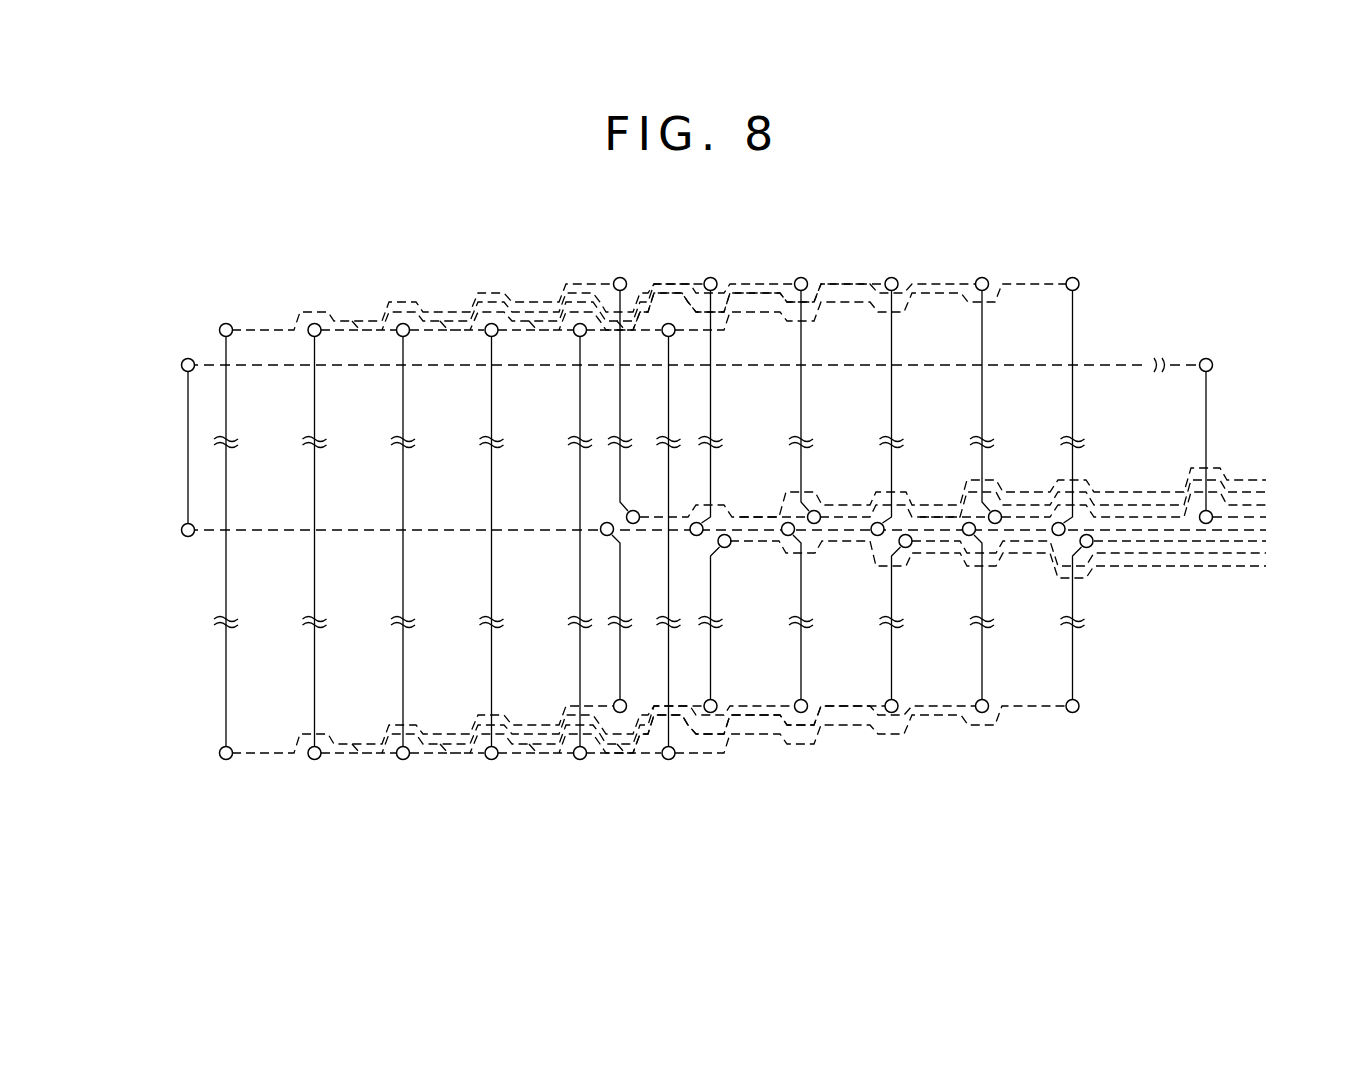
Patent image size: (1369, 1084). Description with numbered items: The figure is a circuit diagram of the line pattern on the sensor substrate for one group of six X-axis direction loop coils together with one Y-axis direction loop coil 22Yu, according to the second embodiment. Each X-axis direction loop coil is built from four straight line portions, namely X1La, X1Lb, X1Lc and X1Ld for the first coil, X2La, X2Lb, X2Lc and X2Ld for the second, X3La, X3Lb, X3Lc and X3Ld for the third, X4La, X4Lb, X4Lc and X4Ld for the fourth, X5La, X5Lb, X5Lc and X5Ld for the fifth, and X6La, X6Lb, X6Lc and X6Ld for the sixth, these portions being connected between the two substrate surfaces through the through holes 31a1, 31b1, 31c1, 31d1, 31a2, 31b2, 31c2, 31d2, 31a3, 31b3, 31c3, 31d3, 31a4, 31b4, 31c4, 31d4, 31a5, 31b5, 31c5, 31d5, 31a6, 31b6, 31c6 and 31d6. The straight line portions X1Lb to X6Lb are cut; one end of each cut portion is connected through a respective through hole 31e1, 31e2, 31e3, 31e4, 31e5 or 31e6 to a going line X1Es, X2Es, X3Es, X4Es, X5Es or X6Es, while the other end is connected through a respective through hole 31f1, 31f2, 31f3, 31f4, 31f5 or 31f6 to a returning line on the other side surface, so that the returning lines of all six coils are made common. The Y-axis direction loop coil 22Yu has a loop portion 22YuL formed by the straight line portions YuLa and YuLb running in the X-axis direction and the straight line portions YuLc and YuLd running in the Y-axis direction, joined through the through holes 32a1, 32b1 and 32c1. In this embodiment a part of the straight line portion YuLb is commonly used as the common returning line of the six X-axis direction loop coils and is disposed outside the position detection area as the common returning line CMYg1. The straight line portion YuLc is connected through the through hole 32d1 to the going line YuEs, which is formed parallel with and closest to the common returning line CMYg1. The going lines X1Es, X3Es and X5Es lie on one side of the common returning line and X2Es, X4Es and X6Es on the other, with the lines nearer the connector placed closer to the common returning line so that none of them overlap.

The Y-axis direction loop coil 22Yu is at (210, 363).
The loop portion 22YuL is at (273, 535).
The straight line portion YuLa is at (1115, 362).
The straight line portion YuLb is at (448, 527).
The straight line portion YuLc is at (186, 420).
The straight line portion YuLd is at (1212, 392).
The going line YuEs is at (1265, 526).
The through hole 32a1 is at (1206, 358).
The through hole 32b1 is at (186, 358).
The through hole 32c1 is at (181, 530).
The through hole 32d1 is at (1206, 524).
The common returning line CMYg1 is at (1259, 589).
The straight line portion X1La is at (225, 580).
The straight line portion X2La is at (312, 430).
The straight line portion X3La is at (402, 492).
The straight line portion X4La is at (490, 600).
The straight line portion X5La is at (578, 652).
The straight line portion X6La is at (667, 680).
The straight line portion X1Lb is at (618, 425).
The straight line portion X2Lb is at (713, 425).
The straight line portion X3Lb is at (803, 425).
The straight line portion X4Lb is at (893, 425).
The straight line portion X5Lb is at (983, 425).
The straight line portion X6Lb is at (1073, 425).
The straight line portion X1Lc is at (265, 326).
The straight line portion X2Lc is at (355, 320).
The straight line portion X3Lc is at (447, 310).
The straight line portion X4Lc is at (527, 300).
The straight line portion X5Lc is at (607, 292).
The straight line portion X6Lc is at (745, 310).
The straight line portion X1Ld is at (265, 757).
The straight line portion X2Ld is at (354, 745).
The straight line portion X3Ld is at (445, 738).
The straight line portion X4Ld is at (530, 735).
The straight line portion X5Ld is at (608, 739).
The straight line portion X6Ld is at (706, 739).
The going line X1Es is at (1215, 467).
The going line X2Es is at (1105, 570).
The going line X3Es is at (1194, 480).
The going line X4Es is at (1120, 555).
The going line X5Es is at (1170, 491).
The going line X6Es is at (1140, 545).
The through hole 31a1 is at (620, 277).
The through hole 31a2 is at (710, 277).
The through hole 31a3 is at (801, 277).
The through hole 31a4 is at (892, 277).
The through hole 31a5 is at (982, 277).
The through hole 31a6 is at (1072, 277).
The through hole 31b1 is at (226, 323).
The through hole 31b2 is at (314, 323).
The through hole 31b3 is at (403, 323).
The through hole 31b4 is at (491, 323).
The through hole 31b5 is at (580, 323).
The through hole 31b6 is at (668, 323).
The through hole 31c1 is at (226, 760).
The through hole 31c2 is at (314, 760).
The through hole 31c3 is at (403, 760).
The through hole 31c4 is at (491, 760).
The through hole 31c5 is at (580, 760).
The through hole 31c6 is at (668, 760).
The through hole 31d1 is at (621, 713).
The through hole 31d2 is at (711, 713).
The through hole 31d3 is at (801, 713).
The through hole 31d4 is at (891, 713).
The through hole 31d5 is at (982, 713).
The through hole 31d6 is at (1073, 713).
The through hole 31e1 is at (627, 517).
The through hole 31e2 is at (728, 534).
The through hole 31e3 is at (819, 510).
The through hole 31e4 is at (909, 534).
The through hole 31e5 is at (999, 510).
The through hole 31e6 is at (1090, 534).
The through hole 31f1 is at (602, 535).
The through hole 31f2 is at (700, 536).
The through hole 31f3 is at (787, 536).
The through hole 31f4 is at (876, 536).
The through hole 31f5 is at (967, 536).
The through hole 31f6 is at (1056, 536).